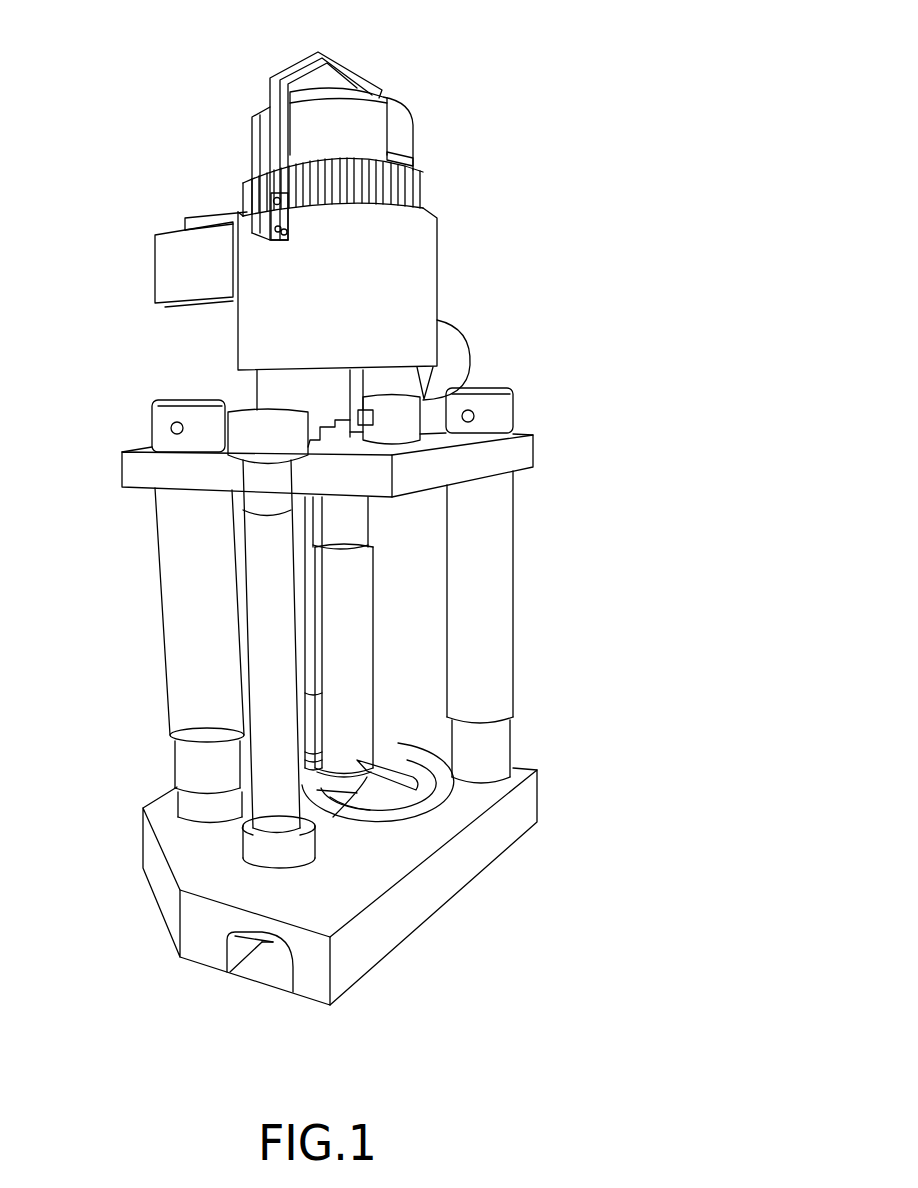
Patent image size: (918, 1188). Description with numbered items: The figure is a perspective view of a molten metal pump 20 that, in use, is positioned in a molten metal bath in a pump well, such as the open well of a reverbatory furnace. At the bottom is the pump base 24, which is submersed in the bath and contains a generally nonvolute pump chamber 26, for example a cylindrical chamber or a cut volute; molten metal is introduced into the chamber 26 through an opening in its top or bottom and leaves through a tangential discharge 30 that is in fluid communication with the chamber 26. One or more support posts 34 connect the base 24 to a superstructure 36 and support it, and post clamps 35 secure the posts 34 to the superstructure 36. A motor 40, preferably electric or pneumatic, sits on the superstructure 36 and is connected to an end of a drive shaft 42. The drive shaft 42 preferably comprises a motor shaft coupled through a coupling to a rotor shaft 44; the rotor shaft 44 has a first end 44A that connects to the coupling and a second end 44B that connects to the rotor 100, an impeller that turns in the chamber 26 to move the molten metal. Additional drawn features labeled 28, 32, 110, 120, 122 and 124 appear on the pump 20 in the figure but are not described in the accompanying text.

The molten metal pump 20 is at (572, 98).
The pump base 24 is at (538, 797).
The pump chamber 26 is at (412, 748).
The ring flange 28 is at (458, 790).
The tangential discharge 30 is at (263, 972).
The channel wall 32 is at (227, 953).
The support posts 34 is at (157, 553).
The post clamps 35 is at (152, 424).
The superstructure 36 is at (527, 458).
The motor 40 is at (413, 268).
The drive shaft 42 is at (393, 562).
The rotor shaft 44 is at (380, 643).
The first end 44A is at (380, 503).
The second end 44B is at (362, 762).
The rotor 100 is at (397, 802).
The bushings 110 is at (165, 802).
The central column 120 is at (230, 628).
The upper hub 122 is at (245, 410).
The lower footing 124 is at (317, 838).